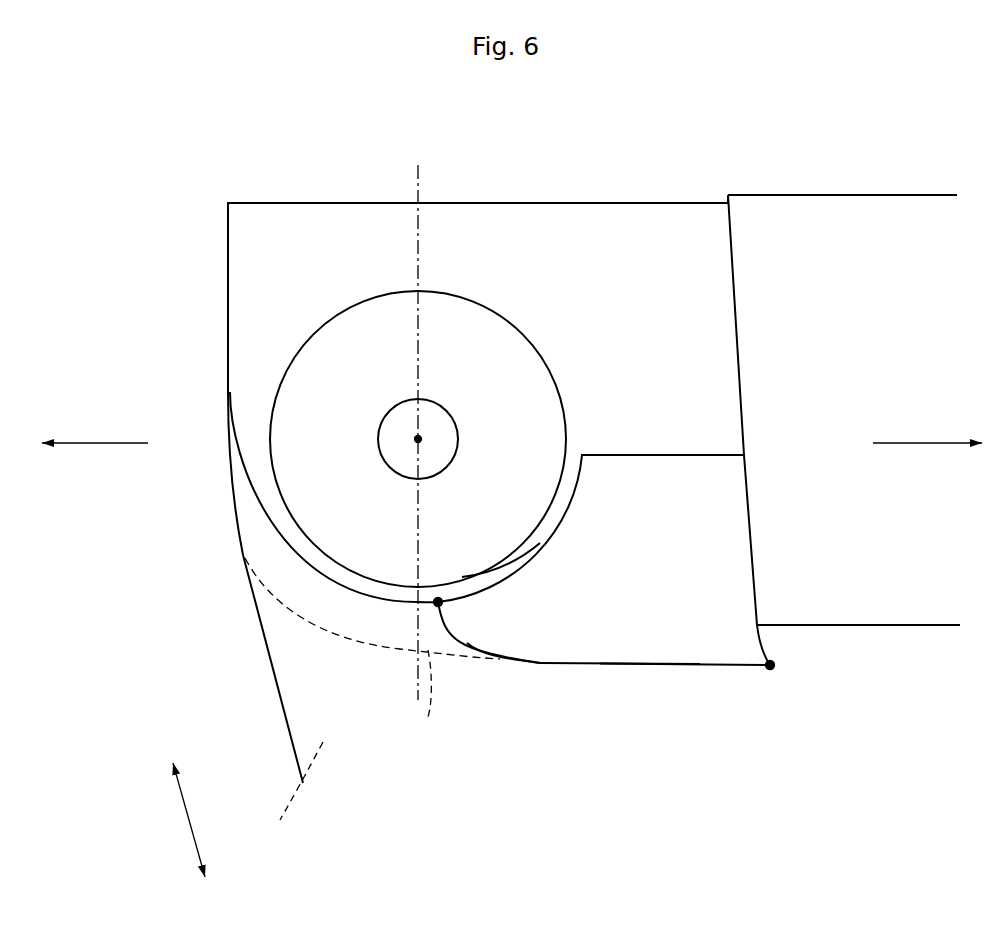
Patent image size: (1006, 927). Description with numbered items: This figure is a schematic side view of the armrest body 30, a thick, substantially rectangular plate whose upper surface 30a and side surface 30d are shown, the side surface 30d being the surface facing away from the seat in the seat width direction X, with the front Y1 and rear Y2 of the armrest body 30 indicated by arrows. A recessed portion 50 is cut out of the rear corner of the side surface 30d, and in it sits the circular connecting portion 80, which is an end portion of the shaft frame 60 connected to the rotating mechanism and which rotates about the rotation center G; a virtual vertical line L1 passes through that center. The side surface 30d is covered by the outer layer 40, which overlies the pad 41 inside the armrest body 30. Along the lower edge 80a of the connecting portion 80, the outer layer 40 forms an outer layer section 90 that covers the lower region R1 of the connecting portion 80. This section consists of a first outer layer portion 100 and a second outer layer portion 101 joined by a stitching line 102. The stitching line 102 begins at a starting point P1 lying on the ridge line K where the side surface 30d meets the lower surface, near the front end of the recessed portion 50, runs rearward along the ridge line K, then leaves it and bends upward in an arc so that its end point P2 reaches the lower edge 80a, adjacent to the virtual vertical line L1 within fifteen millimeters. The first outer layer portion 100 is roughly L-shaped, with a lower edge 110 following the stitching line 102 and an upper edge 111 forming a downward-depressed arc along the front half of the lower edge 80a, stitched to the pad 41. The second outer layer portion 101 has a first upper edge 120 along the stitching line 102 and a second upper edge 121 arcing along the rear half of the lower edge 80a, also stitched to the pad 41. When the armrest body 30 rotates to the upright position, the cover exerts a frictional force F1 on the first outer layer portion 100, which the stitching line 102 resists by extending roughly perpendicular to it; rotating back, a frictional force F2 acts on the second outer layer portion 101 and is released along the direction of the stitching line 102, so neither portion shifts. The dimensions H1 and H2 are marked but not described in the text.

The armrest body 30 is at (558, 200).
The upper surface 30a is at (883, 194).
The side surface 30d is at (755, 213).
The recessed portion 50 is at (627, 202).
The shaft frame 60 is at (327, 360).
The connecting portion 80 is at (503, 307).
The lower edge of the connecting portion 80a is at (462, 577).
The outer layer section 90 is at (330, 637).
The first outer layer portion 100 is at (668, 668).
The second outer layer portion 101 is at (233, 528).
The stitching line 102 is at (458, 640).
The lower edge 110 is at (607, 665).
The upper edge 111 is at (572, 498).
The first upper edge 120 is at (485, 657).
The second upper edge 121 is at (278, 528).
The outer layer 40 is at (305, 718).
The pad 41 is at (284, 794).
The virtual vertical line L1 is at (413, 415).
The rotation center G is at (421, 437).
The starting point P1 is at (772, 667).
The end point P2 is at (438, 598).
The height H1 is at (465, 640).
The gap H2 is at (328, 573).
The frictional force F1 is at (565, 553).
The frictional force F2 is at (393, 623).
The lower region R1 is at (402, 633).
The ridge line K is at (419, 696).
The seat width direction X is at (181, 820).
The front Y1 is at (927, 426).
The rear Y2 is at (95, 426).